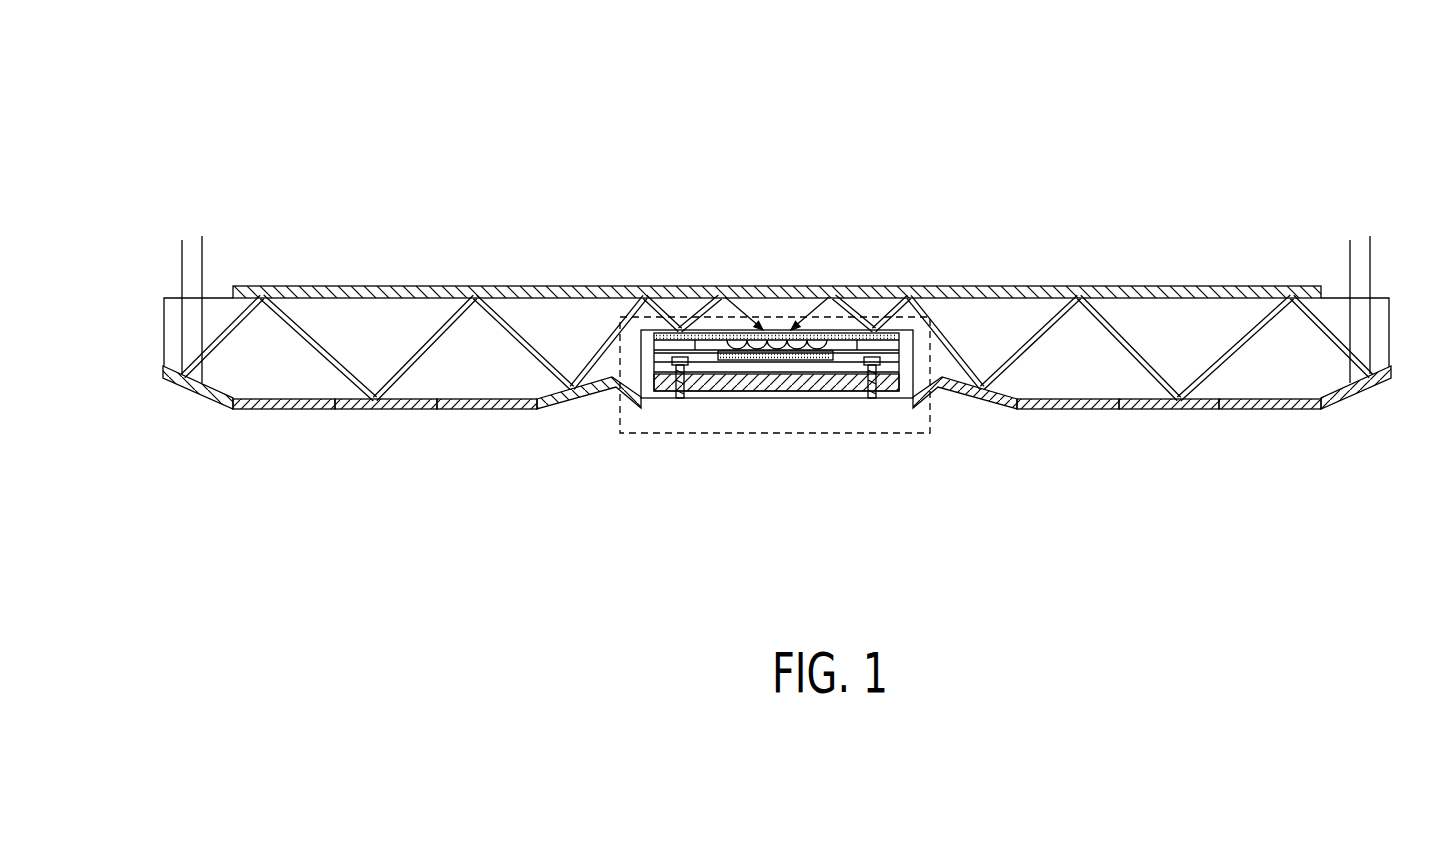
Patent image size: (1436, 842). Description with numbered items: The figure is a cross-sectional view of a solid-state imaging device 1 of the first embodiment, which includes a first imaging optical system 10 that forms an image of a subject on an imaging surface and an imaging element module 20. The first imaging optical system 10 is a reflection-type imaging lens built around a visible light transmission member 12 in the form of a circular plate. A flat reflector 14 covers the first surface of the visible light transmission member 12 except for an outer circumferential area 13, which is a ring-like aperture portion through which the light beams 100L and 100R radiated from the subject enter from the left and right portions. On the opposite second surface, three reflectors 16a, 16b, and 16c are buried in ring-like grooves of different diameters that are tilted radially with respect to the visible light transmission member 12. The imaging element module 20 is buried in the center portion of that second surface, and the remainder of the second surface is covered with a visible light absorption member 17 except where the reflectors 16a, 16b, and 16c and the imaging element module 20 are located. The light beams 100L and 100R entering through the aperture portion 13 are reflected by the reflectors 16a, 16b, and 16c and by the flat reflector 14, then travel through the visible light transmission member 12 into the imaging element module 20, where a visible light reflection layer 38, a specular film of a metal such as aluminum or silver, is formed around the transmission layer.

The solid-state imaging device 1 is at (810, 46).
The first imaging optical system 10 is at (272, 336).
The visible light transmission member 12 is at (375, 308).
The outer circumferential area 13 is at (217, 288).
The flat reflector 14 is at (774, 286).
The reflector 16a is at (192, 385).
The reflector 16b is at (380, 410).
The reflector 16c is at (553, 408).
The visible light absorption member 17 is at (282, 410).
The imaging element module 20 is at (781, 444).
The visible light reflection layer 38 is at (935, 286).
The light beam 100L is at (193, 240).
The light beam 100R is at (1358, 242).